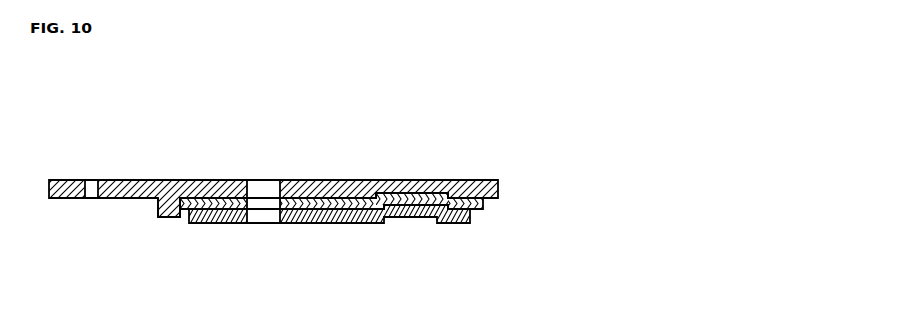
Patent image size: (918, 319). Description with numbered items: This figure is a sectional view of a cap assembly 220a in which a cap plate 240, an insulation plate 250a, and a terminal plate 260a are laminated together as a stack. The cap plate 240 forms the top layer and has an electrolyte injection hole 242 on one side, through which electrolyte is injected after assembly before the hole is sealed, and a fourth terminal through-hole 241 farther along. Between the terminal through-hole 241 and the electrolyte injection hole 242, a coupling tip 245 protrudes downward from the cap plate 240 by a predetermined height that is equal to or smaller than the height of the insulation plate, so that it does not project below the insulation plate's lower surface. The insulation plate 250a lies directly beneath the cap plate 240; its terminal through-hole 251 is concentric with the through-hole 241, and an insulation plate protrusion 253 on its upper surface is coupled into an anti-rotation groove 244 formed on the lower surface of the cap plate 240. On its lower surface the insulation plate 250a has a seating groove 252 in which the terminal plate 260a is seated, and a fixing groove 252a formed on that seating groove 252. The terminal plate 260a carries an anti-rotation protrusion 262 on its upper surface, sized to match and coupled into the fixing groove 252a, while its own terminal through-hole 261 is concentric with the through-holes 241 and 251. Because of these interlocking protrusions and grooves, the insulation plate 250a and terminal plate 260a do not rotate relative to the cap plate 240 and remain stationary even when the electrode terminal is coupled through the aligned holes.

The cap assembly 220a is at (480, 140).
The cap plate 240 is at (497, 180).
The electrolyte injection hole 242 is at (92, 190).
The fourth terminal through-hole 241 is at (263, 190).
The coupling tip 245 is at (159, 209).
The anti-rotation groove 244 is at (399, 192).
The anti-rotation protrusion 262 is at (380, 191).
The insulation plate protrusion 253 is at (430, 193).
The insulation plate 250a is at (483, 205).
The seating groove 252 is at (347, 208).
The fixing groove 252a is at (423, 211).
The terminal through-hole 251 is at (257, 207).
The terminal plate 260a is at (455, 223).
The terminal through-hole 261 is at (272, 218).